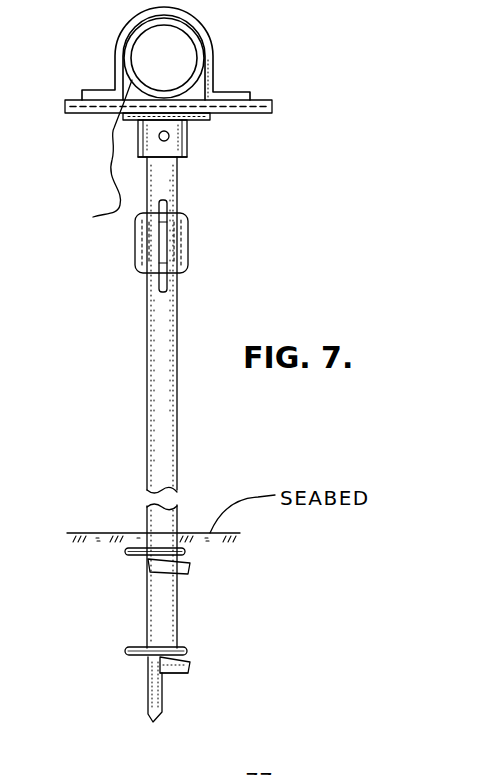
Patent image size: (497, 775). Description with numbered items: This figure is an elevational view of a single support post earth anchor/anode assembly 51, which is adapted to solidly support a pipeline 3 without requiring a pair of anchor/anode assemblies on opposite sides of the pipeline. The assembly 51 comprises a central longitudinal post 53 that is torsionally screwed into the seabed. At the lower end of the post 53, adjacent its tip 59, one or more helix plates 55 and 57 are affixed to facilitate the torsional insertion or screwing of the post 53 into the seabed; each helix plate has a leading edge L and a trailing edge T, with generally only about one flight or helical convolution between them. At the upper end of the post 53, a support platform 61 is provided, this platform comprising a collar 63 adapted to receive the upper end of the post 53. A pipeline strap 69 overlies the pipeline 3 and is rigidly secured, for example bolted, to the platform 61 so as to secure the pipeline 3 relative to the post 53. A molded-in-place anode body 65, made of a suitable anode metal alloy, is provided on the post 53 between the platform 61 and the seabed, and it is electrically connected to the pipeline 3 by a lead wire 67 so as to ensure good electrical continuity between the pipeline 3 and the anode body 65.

The pipeline 3 is at (167, 36).
The pipeline strap 69 is at (213, 55).
The support platform 61 is at (202, 120).
The collar 63 is at (188, 147).
The lead wire 67 is at (98, 155).
The single support post earth anchor/anode assembly 51 is at (200, 257).
The molded-in-place anode body 65 is at (128, 254).
The central longitudinal post 53 is at (164, 471).
The helix plate 57 is at (189, 569).
The trailing edge T is at (183, 649).
The helix plate 55 is at (190, 669).
The leading edge L is at (170, 673).
The tip 59 is at (160, 715).